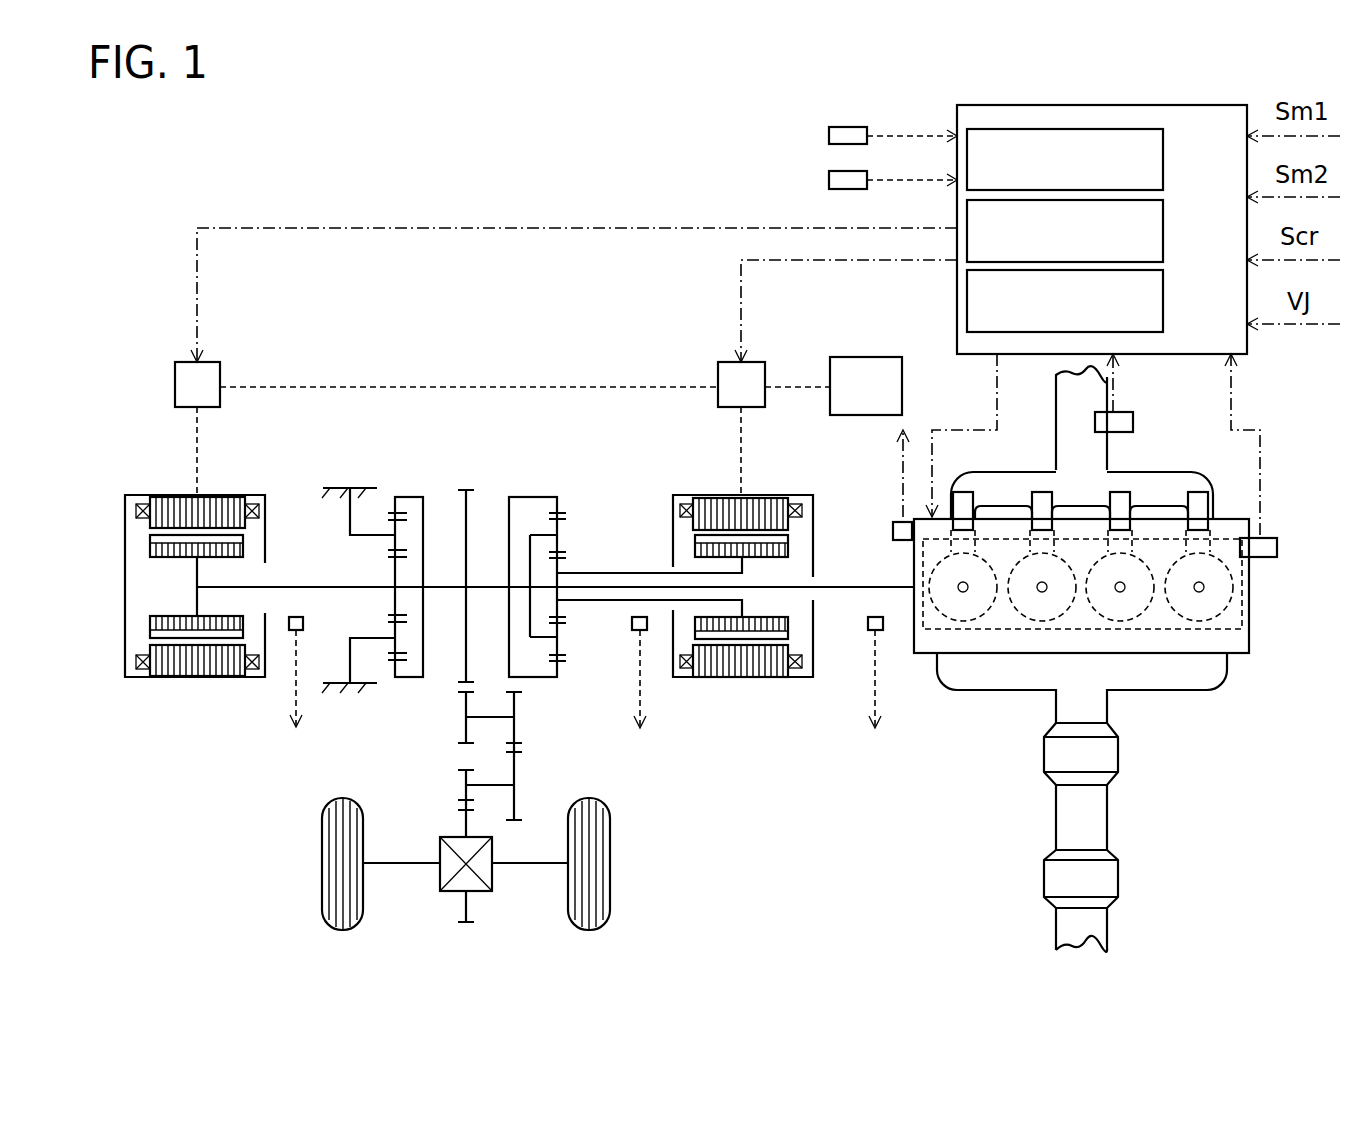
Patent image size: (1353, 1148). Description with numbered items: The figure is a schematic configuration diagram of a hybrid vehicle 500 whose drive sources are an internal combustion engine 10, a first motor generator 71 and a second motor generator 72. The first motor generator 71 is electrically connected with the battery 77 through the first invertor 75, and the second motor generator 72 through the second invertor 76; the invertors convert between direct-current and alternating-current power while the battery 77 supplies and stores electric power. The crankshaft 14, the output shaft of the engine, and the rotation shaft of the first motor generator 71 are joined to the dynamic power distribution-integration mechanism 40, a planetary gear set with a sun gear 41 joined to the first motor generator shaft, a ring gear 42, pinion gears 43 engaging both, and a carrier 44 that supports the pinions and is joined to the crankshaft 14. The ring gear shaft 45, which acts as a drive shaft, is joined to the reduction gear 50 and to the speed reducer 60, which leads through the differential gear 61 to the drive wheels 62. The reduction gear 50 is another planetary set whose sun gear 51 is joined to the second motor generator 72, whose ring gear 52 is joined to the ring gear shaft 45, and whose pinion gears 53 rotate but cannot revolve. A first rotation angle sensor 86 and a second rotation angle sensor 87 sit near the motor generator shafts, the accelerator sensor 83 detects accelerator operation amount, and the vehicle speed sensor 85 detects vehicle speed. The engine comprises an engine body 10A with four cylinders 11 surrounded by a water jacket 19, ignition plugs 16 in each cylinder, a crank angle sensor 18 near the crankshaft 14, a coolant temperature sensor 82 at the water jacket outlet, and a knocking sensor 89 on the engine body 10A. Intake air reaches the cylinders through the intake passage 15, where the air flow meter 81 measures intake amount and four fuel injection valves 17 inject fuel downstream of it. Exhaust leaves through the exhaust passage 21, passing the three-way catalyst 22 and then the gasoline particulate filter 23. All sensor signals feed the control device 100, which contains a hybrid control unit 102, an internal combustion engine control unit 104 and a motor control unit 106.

The control device 100 is at (1168, 104).
The hybrid control unit 102 is at (1163, 160).
The internal combustion engine control unit 104 is at (1163, 228).
The motor control unit 106 is at (1163, 296).
The accelerator sensor 83 is at (828, 136).
The vehicle speed sensor 85 is at (828, 180).
The second invertor 76 is at (175, 396).
The first invertor 75 is at (718, 401).
The battery 77 is at (902, 385).
The second motor generator 72 is at (125, 597).
The first motor generator 71 is at (802, 495).
The crankshaft 14 is at (852, 585).
The reduction gear 50 is at (341, 586).
The sun gear 51 is at (390, 575).
The ring gear 52 is at (386, 498).
The pinion gears 53 is at (394, 644).
The second rotation angle sensor 87 is at (303, 623).
The dynamic power distribution-integration mechanism 40 is at (600, 570).
The sun gear 41 is at (562, 566).
The ring gear 42 is at (560, 514).
The pinion gears 43 is at (560, 628).
The carrier 44 is at (547, 677).
The ring gear shaft 45 is at (492, 586).
The first rotation angle sensor 86 is at (647, 623).
The crank angle sensor 18 is at (883, 623).
The hybrid vehicle 500 is at (788, 702).
The speed reducer 60 is at (542, 755).
The differential gear 61 is at (449, 893).
The drive wheels 62 is at (322, 872).
The internal combustion engine 10 is at (1083, 653).
The engine body 10A is at (1249, 590).
The water jacket 19 is at (1242, 625).
The cylinders 11 is at (966, 622).
The ignition plugs 16 is at (968, 590).
The three-way catalyst 22 is at (1044, 753).
The exhaust passage 21 is at (1056, 815).
The gasoline particulate filter 23 is at (1046, 882).
The intake passage 15 is at (1056, 412).
The fuel injection valves 17 is at (1039, 492).
The air flow meter 81 is at (1133, 422).
The coolant temperature sensor 82 is at (1277, 548).
The knocking sensor 89 is at (893, 530).